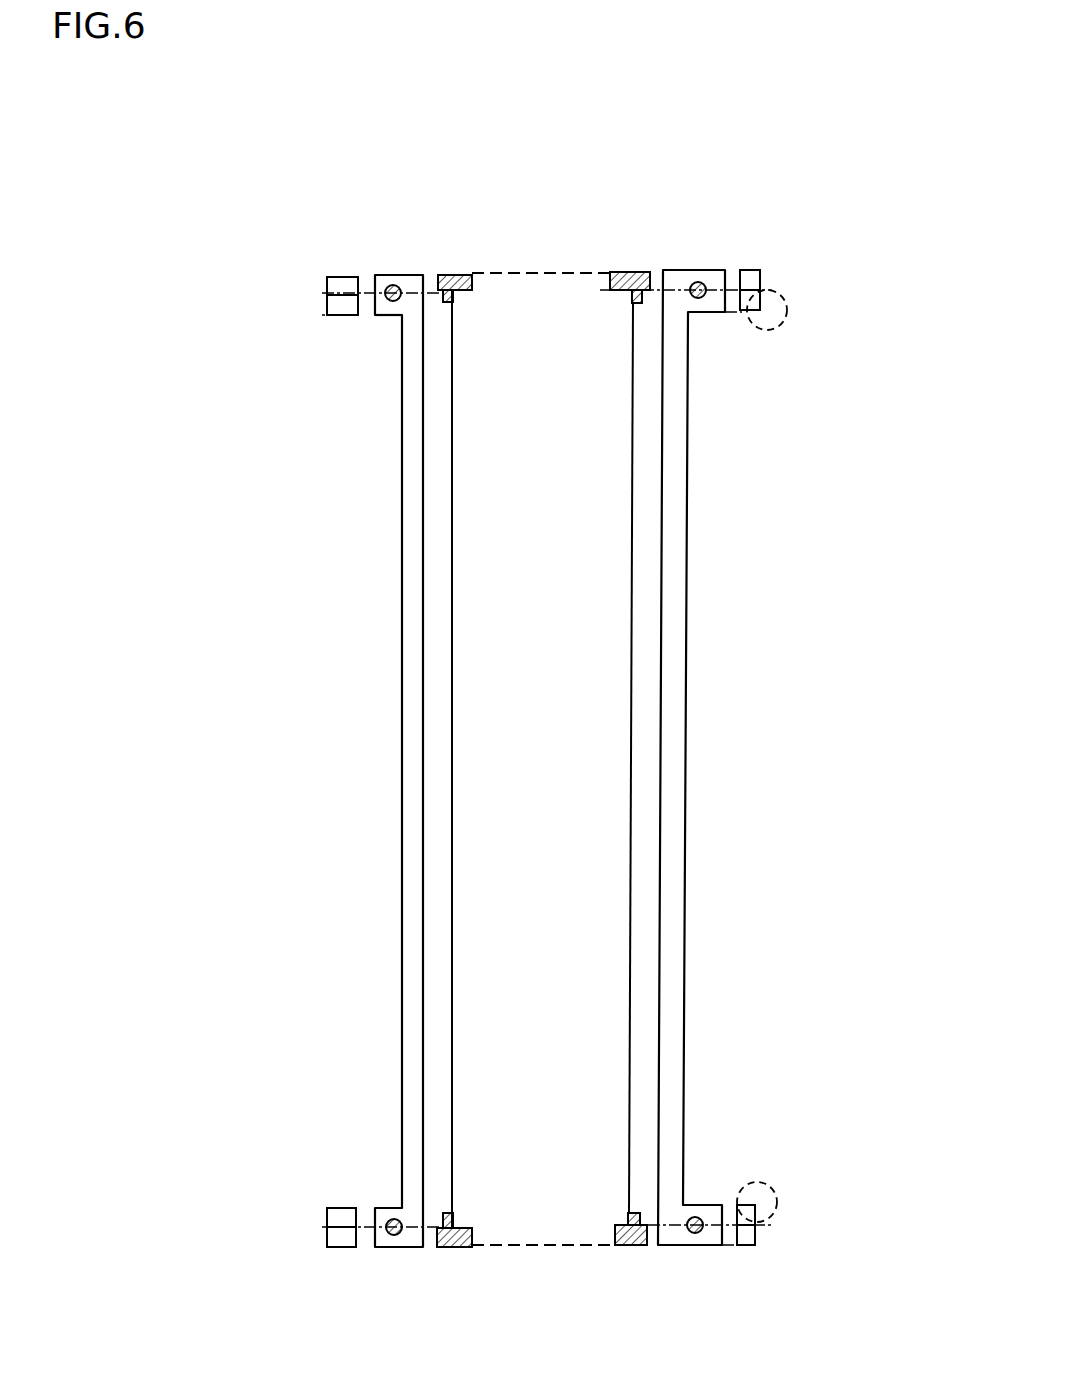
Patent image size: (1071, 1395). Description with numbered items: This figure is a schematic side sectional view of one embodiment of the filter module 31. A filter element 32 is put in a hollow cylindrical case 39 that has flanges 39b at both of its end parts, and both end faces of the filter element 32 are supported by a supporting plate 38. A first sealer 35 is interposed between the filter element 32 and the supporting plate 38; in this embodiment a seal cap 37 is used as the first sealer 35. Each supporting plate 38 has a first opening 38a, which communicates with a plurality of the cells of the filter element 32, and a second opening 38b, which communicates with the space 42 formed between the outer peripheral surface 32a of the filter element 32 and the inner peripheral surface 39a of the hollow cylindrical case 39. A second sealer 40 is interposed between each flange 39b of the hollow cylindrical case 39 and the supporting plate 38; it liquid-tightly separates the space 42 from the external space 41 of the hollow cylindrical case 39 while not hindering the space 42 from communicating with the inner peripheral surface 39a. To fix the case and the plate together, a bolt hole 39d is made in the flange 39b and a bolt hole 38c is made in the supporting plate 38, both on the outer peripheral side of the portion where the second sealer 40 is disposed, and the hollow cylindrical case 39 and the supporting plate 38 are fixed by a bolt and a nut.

The filter module 31 is at (795, 112).
The filter element 32 is at (626, 759).
The outer peripheral surface 32a is at (641, 618).
The first sealer 35 is at (638, 304).
The seal cap 37 is at (635, 759).
The supporting plate 38 is at (683, 272).
The first opening 38a is at (535, 265).
The second opening 38b is at (429, 266).
The bolt hole 38c is at (366, 266).
The hollow cylindrical case 39 is at (675, 1005).
The inner peripheral surface 39a is at (651, 942).
The flange 39b is at (782, 313).
The bolt hole 39d is at (367, 324).
The second sealer 40 is at (702, 286).
The external space 41 is at (297, 740).
The space 42 is at (647, 795).